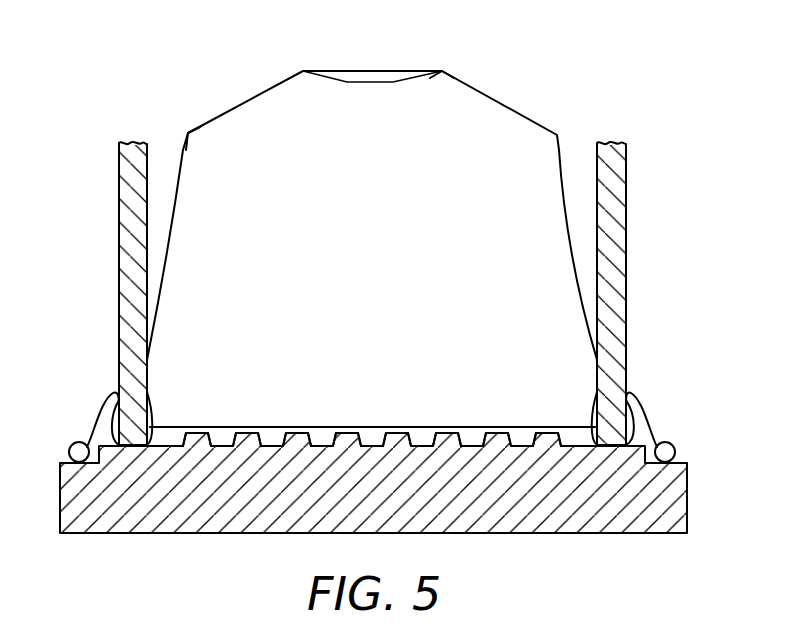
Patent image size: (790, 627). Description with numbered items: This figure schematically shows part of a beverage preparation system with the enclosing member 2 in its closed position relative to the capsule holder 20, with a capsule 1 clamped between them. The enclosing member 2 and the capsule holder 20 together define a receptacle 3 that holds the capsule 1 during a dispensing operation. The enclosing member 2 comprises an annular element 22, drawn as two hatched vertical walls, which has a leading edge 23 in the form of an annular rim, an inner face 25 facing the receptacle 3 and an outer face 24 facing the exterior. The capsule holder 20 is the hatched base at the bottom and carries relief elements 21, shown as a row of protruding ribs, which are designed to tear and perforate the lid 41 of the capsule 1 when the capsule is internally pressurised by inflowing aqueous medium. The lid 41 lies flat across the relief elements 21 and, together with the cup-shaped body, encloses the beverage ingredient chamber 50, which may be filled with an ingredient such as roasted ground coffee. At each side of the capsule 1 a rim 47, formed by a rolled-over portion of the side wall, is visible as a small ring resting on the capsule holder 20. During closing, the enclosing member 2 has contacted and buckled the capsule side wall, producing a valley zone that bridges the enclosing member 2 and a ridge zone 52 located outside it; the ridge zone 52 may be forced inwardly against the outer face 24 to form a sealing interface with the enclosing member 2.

The capsule 1 is at (444, 66).
The enclosing member 2 is at (620, 266).
The receptacle 3 is at (185, 127).
The capsule holder 20 is at (212, 537).
The relief elements 21 is at (293, 431).
The annular element 22 is at (627, 323).
The leading edge 23 is at (133, 293).
The outer face 24 is at (627, 219).
The inner face 25 is at (597, 146).
The lid 41 is at (366, 427).
The rim 47 is at (68, 441).
The beverage ingredient chamber 50 is at (386, 257).
The ridge zone 52 is at (102, 397).